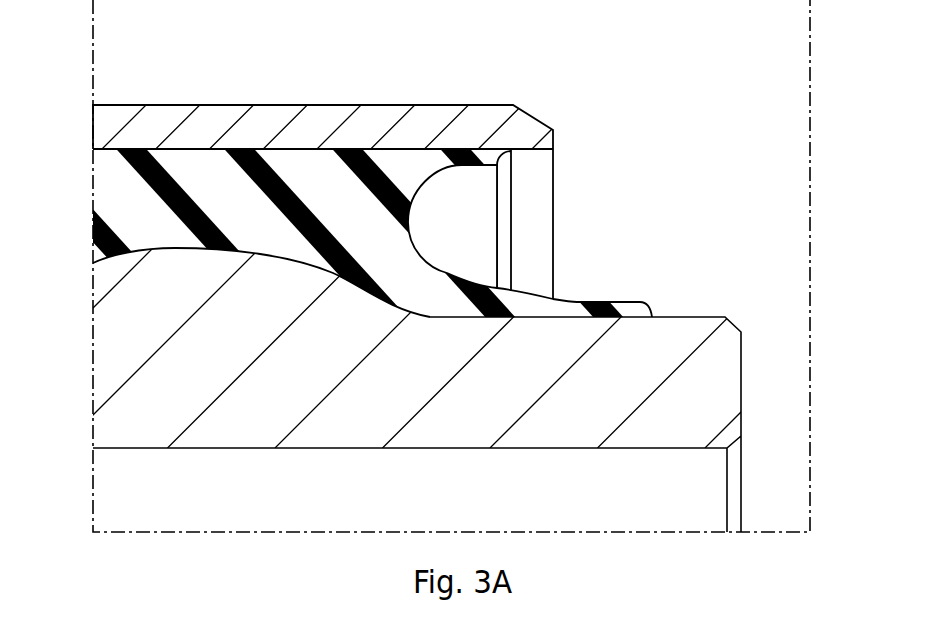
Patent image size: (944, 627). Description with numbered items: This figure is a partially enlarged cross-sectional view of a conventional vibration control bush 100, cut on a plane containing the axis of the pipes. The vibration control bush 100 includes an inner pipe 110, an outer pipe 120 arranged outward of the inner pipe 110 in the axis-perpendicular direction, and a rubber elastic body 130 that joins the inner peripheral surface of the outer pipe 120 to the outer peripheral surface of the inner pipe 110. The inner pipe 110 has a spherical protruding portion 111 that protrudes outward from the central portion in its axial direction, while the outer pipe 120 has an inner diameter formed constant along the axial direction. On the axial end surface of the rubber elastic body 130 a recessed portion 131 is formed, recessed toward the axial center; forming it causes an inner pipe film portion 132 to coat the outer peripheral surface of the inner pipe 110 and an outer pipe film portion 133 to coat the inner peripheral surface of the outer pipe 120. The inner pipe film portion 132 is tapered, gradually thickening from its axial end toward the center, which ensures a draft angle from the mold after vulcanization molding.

The vibration control bush 100 is at (690, 92).
The inner pipe 110 is at (456, 335).
The spherical protruding portion 111 is at (177, 260).
The outer pipe 120 is at (492, 117).
The rubber elastic body 130 is at (361, 186).
The recessed portion 131 is at (455, 217).
The inner pipe film portion 132 is at (627, 302).
The outer pipe film portion 133 is at (480, 157).